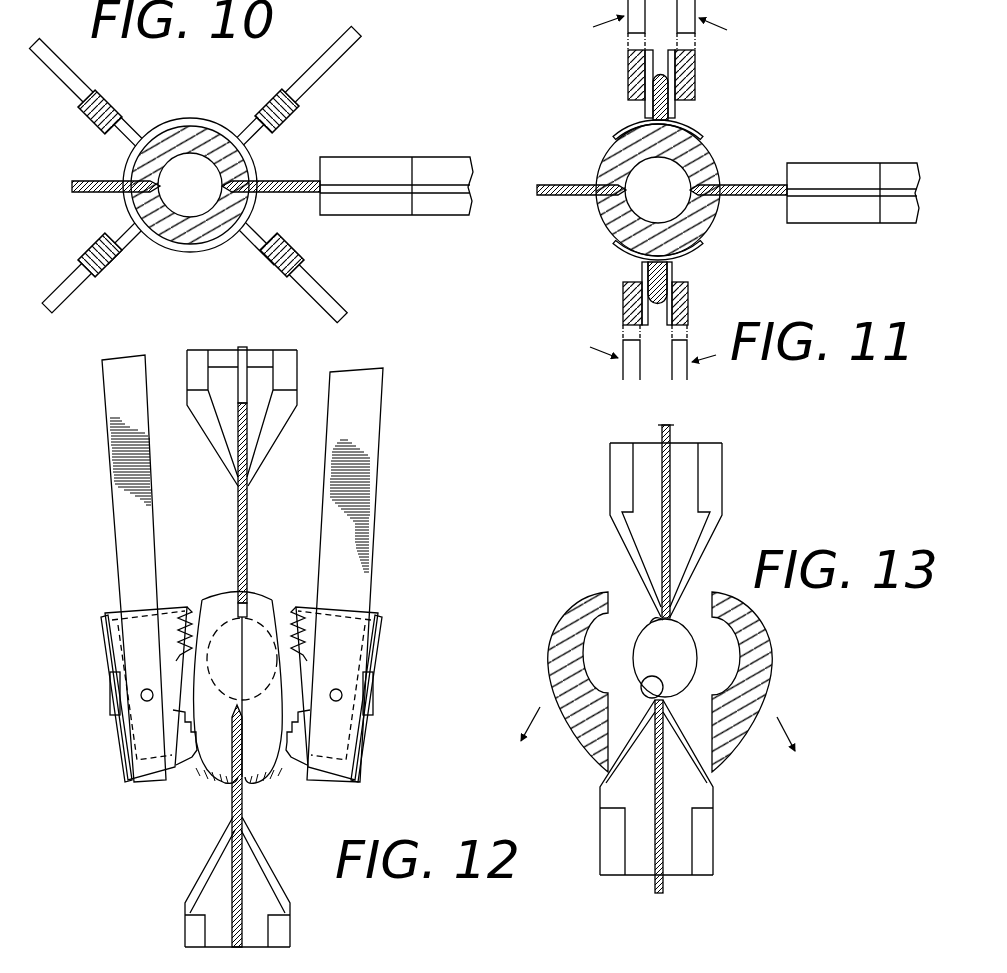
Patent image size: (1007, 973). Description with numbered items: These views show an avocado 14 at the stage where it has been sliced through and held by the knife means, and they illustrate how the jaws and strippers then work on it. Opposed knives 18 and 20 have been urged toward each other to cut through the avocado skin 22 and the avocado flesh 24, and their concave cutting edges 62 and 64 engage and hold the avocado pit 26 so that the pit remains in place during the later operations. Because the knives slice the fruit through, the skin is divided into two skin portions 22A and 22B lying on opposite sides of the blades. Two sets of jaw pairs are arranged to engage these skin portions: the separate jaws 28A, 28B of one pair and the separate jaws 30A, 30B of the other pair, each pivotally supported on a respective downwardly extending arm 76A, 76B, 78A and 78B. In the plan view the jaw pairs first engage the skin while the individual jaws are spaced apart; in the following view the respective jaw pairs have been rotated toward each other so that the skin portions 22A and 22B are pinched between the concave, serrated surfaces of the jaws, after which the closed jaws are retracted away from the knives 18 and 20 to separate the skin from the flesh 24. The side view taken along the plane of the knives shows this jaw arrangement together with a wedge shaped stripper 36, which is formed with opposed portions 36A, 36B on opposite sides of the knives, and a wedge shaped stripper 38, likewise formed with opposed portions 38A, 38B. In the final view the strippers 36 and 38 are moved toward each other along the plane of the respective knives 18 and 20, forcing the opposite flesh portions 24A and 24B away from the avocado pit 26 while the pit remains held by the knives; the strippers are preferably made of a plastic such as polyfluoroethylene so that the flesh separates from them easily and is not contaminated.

In FIG. 10, the avocado 14 is at (260, 207).
In FIG. 12, the knife 18 is at (248, 540).
In FIG. 13, the knife 18 is at (662, 527).
In FIG. 10, the knife 20 is at (88, 180).
In FIG. 11, the knife 20 is at (562, 184).
In FIG. 12, the knife 20 is at (243, 849).
In FIG. 13, the knife 20 is at (663, 799).
In FIG. 10, the avocado skin 22 is at (128, 207).
In FIG. 11, the skin portion 22A is at (628, 250).
In FIG. 12, the skin portion 22A is at (140, 606).
In FIG. 11, the skin portion 22B is at (617, 133).
In FIG. 12, the skin portion 22B is at (343, 606).
In FIG. 10, the avocado flesh 24 is at (193, 128).
In FIG. 11, the avocado flesh 24 is at (718, 158).
In FIG. 12, the avocado flesh 24 is at (227, 596).
In FIG. 13, the flesh portion 24A is at (552, 661).
In FIG. 13, the flesh portion 24B is at (773, 661).
In FIG. 10, the avocado pit 26 is at (198, 214).
In FIG. 11, the avocado pit 26 is at (652, 168).
In FIG. 12, the avocado pit 26 is at (276, 648).
In FIG. 13, the avocado pit 26 is at (670, 654).
In FIG. 10, the jaw 28A is at (246, 251).
In FIG. 11, the jaw 28A is at (673, 273).
In FIG. 10, the jaw 28B is at (112, 281).
In FIG. 11, the jaw 28B is at (642, 268).
In FIG. 12, the jaw 28B is at (302, 768).
In FIG. 10, the jaw 30A is at (245, 133).
In FIG. 11, the jaw 30A is at (674, 116).
In FIG. 10, the jaw 30B is at (140, 133).
In FIG. 11, the jaw 30B is at (646, 116).
In FIG. 12, the jaw 30B is at (183, 770).
In FIG. 12, the stripper 36 is at (217, 470).
In FIG. 13, the stripper 36 is at (620, 557).
In FIG. 12, the stripper portion 36A is at (197, 428).
In FIG. 13, the stripper portion 36A is at (610, 488).
In FIG. 12, the stripper portion 36B is at (277, 447).
In FIG. 13, the stripper portion 36B is at (722, 471).
In FIG. 12, the stripper 38 is at (196, 879).
In FIG. 13, the stripper 38 is at (599, 797).
In FIG. 12, the stripper portion 38A is at (185, 938).
In FIG. 13, the stripper portion 38A is at (615, 858).
In FIG. 12, the stripper portion 38B is at (290, 934).
In FIG. 13, the stripper portion 38B is at (703, 851).
In FIG. 13, the concave cutting edge 62 is at (652, 623).
In FIG. 13, the concave cutting edge 64 is at (647, 698).
In FIG. 10, the downwardly extending arm 76A is at (292, 247).
In FIG. 11, the downwardly extending arm 76A is at (690, 295).
In FIG. 10, the downwardly extending arm 76B is at (98, 243).
In FIG. 11, the downwardly extending arm 76B is at (623, 312).
In FIG. 12, the downwardly extending arm 76B is at (365, 404).
In FIG. 10, the downwardly extending arm 78A is at (288, 116).
In FIG. 11, the downwardly extending arm 78A is at (695, 58).
In FIG. 10, the downwardly extending arm 78B is at (100, 128).
In FIG. 11, the downwardly extending arm 78B is at (628, 60).
In FIG. 12, the downwardly extending arm 78B is at (118, 528).